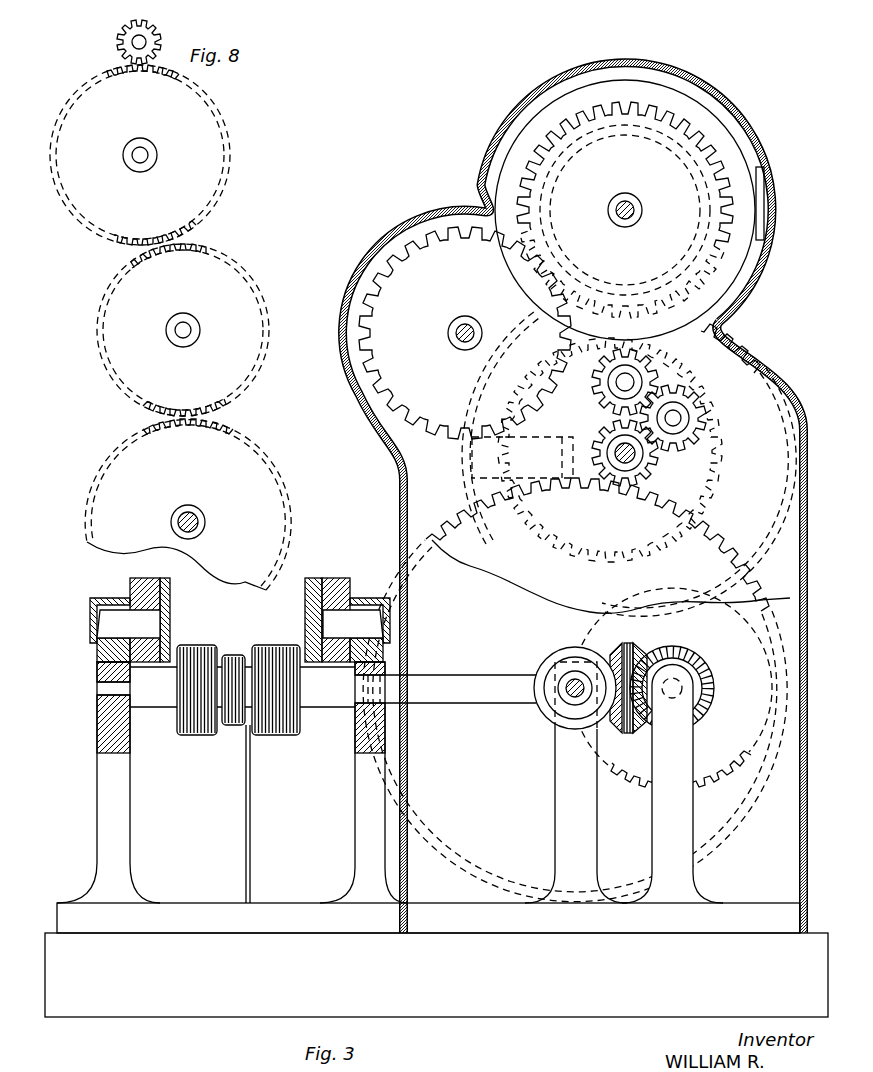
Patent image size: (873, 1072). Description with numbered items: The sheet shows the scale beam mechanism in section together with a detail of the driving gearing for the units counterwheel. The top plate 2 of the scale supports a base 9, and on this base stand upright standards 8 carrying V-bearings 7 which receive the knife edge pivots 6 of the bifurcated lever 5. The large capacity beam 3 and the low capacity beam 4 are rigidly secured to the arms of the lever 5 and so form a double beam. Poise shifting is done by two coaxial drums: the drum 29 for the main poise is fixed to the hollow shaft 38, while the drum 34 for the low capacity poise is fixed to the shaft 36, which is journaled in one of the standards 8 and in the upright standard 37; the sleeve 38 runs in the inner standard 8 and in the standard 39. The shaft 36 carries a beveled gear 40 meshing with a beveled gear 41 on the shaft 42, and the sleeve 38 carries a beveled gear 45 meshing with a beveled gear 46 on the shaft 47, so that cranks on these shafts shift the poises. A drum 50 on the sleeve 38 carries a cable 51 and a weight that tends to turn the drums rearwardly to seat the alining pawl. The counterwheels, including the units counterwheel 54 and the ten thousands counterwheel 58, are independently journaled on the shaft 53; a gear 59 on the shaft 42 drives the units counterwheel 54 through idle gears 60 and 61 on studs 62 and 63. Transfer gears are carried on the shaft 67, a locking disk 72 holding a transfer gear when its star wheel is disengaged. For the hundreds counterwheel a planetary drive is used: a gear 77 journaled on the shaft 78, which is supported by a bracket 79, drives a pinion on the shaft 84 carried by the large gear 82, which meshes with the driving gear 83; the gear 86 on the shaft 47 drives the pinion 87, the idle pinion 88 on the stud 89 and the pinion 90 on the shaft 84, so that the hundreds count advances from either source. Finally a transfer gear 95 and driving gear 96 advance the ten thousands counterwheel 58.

In FIG. 3, the top plate 2 is at (247, 1007).
In FIG. 3, the beam 3 is at (313, 598).
In FIG. 3, the beam 4 is at (170, 608).
In FIG. 3, the bifurcated lever 5 is at (132, 587).
In FIG. 3, the knife edge pivots 6 is at (240, 624).
In FIG. 3, the V-bearings 7 is at (100, 648).
In FIG. 3, the upright standards 8 is at (113, 810).
In FIG. 3, the base 9 is at (258, 916).
In FIG. 3, the drum 29 is at (263, 734).
In FIG. 3, the drum 34 is at (177, 733).
In FIG. 3, the shaft 36 is at (107, 689).
In FIG. 3, the upright standard 37 is at (672, 784).
In FIG. 3, the hollow shaft 38 is at (462, 695).
In FIG. 3, the standard 39 is at (576, 816).
In FIG. 3, the beveled gear 40 is at (632, 733).
In FIG. 3, the beveled gear 41 is at (708, 717).
In FIG. 8, the shaft 42 is at (188, 505).
In FIG. 3, the shaft 42 is at (672, 698).
In FIG. 3, the beveled gear 45 is at (614, 732).
In FIG. 3, the beveled gear 46 is at (548, 717).
In FIG. 3, the shaft 47 is at (572, 686).
In FIG. 3, the drum 50 is at (223, 727).
In FIG. 3, the cable 51 is at (251, 812).
In FIG. 8, the shaft 53 is at (132, 43).
In FIG. 3, the shaft 53 is at (644, 208).
In FIG. 8, the units counterwheel 54 is at (125, 34).
In FIG. 3, the ten thousands counterwheel 58 is at (563, 105).
In FIG. 8, the gear 59 is at (292, 523).
In FIG. 3, the gear 59 is at (762, 667).
In FIG. 8, the idle gear 60 is at (264, 346).
In FIG. 8, the idle gear 61 is at (228, 148).
In FIG. 8, the stud 62 is at (181, 332).
In FIG. 8, the stud 63 is at (132, 156).
In FIG. 3, the shaft 67 is at (465, 318).
In FIG. 3, the locking disk 72 is at (393, 263).
In FIG. 3, the gear 77 is at (641, 573).
In FIG. 3, the shaft 78 is at (621, 450).
In FIG. 3, the bracket 79 is at (522, 457).
In FIG. 3, the large gear 82 is at (732, 330).
In FIG. 3, the driving gear 83 is at (676, 271).
In FIG. 3, the shaft 84 is at (614, 383).
In FIG. 3, the gear 86 is at (713, 544).
In FIG. 3, the pinion 87 is at (657, 461).
In FIG. 3, the idle pinion 88 is at (703, 400).
In FIG. 3, the stud 89 is at (674, 420).
In FIG. 3, the pinion 90 is at (650, 367).
In FIG. 3, the transfer gear 95 is at (413, 243).
In FIG. 3, the driving gear 96 is at (530, 183).